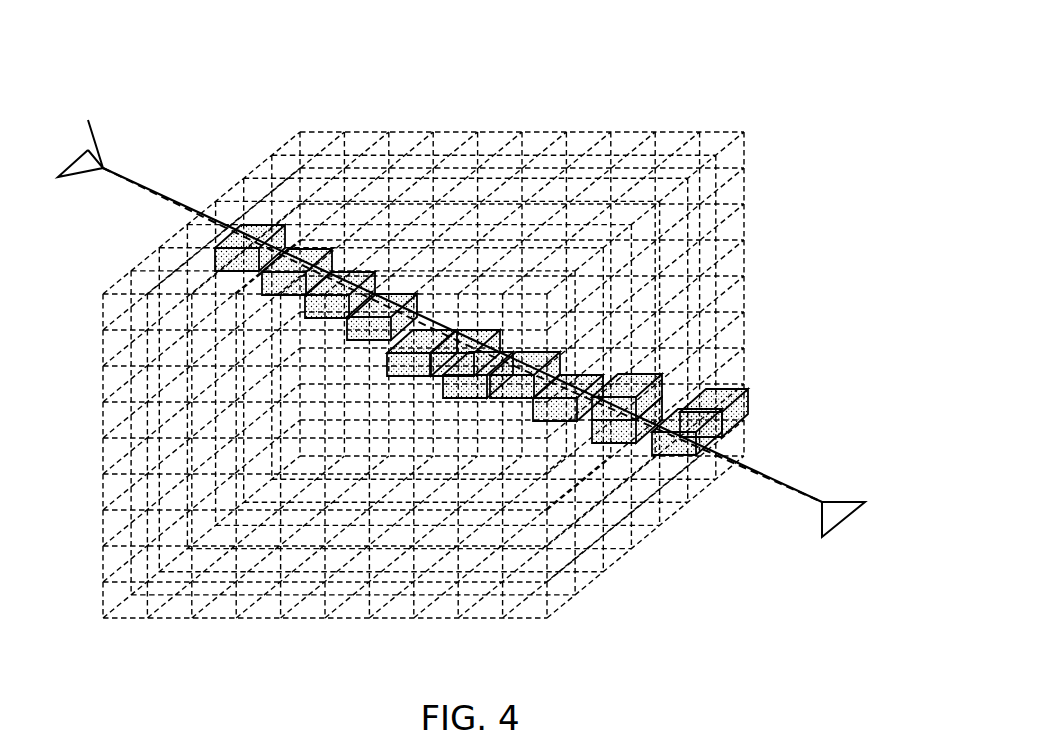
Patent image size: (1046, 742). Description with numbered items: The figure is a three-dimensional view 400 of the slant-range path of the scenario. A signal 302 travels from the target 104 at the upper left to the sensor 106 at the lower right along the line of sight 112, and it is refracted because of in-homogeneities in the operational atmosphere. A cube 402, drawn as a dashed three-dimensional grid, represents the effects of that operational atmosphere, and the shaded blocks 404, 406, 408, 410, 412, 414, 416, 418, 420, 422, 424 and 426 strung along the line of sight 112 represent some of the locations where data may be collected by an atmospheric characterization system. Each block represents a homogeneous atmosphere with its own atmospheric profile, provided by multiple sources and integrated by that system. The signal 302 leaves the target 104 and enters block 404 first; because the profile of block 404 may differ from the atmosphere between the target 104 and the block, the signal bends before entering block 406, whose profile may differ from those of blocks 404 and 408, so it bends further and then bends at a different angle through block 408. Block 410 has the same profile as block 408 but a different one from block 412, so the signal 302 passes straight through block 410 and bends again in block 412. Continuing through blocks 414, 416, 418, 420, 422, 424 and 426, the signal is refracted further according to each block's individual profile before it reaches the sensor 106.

The 3-D view 400 is at (797, 60).
The cube 402 is at (494, 128).
The target 104 is at (88, 120).
The sensor 106 is at (840, 512).
The line of sight 112 is at (172, 198).
The signal 302 is at (162, 205).
The block 404 is at (262, 222).
The block 406 is at (312, 247).
The block 408 is at (362, 260).
The block 410 is at (395, 287).
The block 412 is at (437, 322).
The block 414 is at (477, 322).
The block 416 is at (463, 402).
The block 418 is at (515, 402).
The block 420 is at (555, 428).
The block 422 is at (640, 372).
The block 424 is at (624, 447).
The block 426 is at (673, 458).